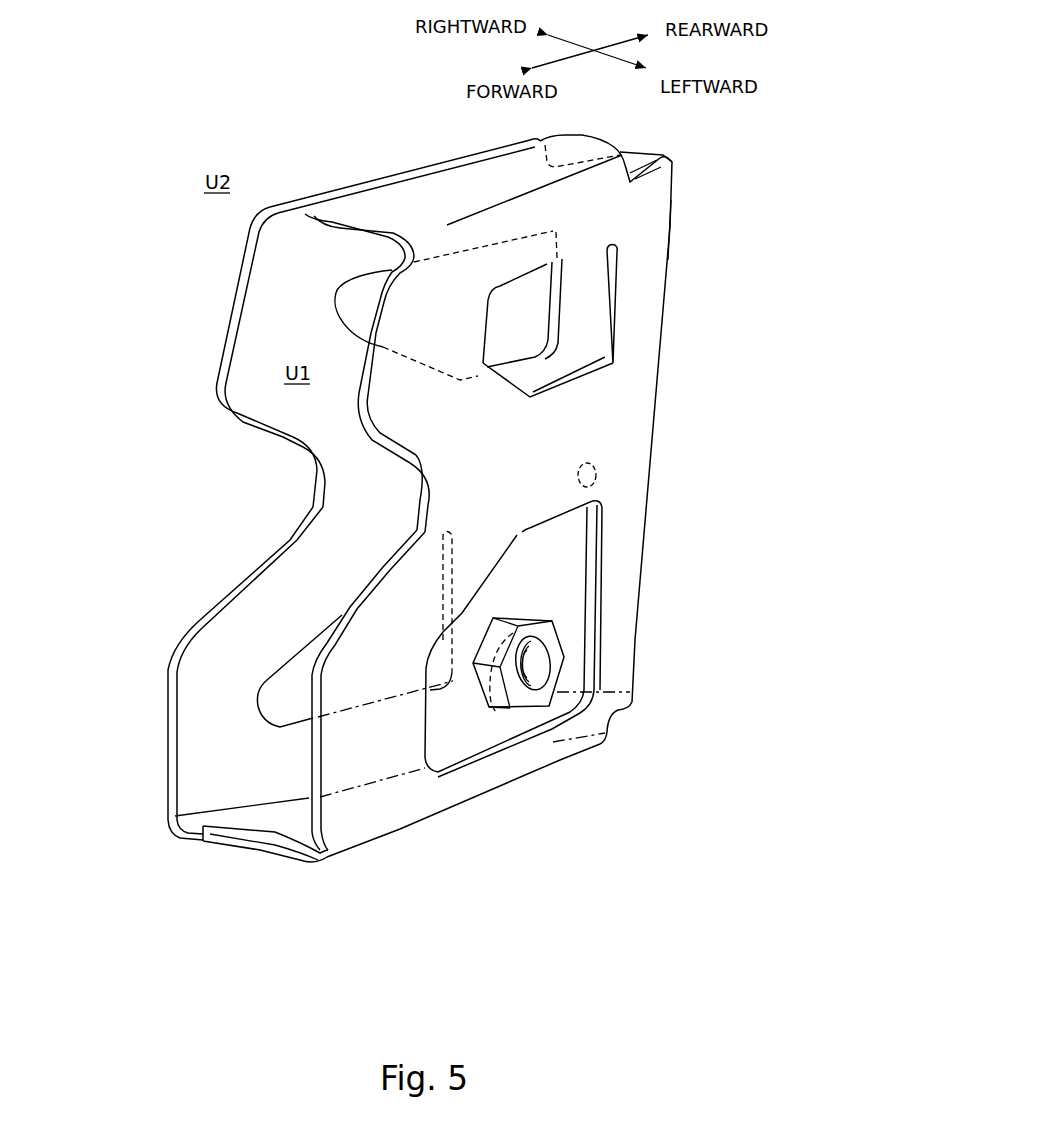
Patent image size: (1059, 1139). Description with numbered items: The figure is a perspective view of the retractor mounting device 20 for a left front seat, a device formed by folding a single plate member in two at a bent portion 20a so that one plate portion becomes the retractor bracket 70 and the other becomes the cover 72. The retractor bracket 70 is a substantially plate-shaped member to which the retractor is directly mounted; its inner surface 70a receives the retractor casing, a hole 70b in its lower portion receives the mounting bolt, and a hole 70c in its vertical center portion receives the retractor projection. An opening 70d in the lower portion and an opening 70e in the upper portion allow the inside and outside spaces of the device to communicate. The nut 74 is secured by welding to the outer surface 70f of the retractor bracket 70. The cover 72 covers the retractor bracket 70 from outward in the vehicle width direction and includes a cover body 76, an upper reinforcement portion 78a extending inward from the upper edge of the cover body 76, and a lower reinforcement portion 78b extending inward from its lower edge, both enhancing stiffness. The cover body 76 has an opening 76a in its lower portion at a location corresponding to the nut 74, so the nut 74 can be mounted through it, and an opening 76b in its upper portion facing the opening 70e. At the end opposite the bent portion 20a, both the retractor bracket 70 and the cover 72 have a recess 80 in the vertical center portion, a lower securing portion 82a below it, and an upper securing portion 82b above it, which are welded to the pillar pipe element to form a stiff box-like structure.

The retractor mounting device 20 is at (274, 131).
The bent portion 20a is at (667, 225).
The retractor bracket 70 is at (260, 317).
The inner surface 70a is at (293, 592).
The hole 70b is at (492, 712).
The hole 70c is at (600, 462).
The opening 70d is at (287, 700).
The opening 70e is at (357, 313).
The outer surface 70f is at (540, 590).
The cover 72 is at (373, 753).
The nut 74 is at (560, 660).
The cover body 76 is at (620, 397).
The opening 76a is at (563, 553).
The opening 76b is at (585, 320).
The upper reinforcement portion 78a is at (427, 197).
The lower reinforcement portion 78b is at (277, 832).
The recess 80 is at (323, 468).
The lower securing portion 82a is at (170, 690).
The upper securing portion 82b is at (250, 253).